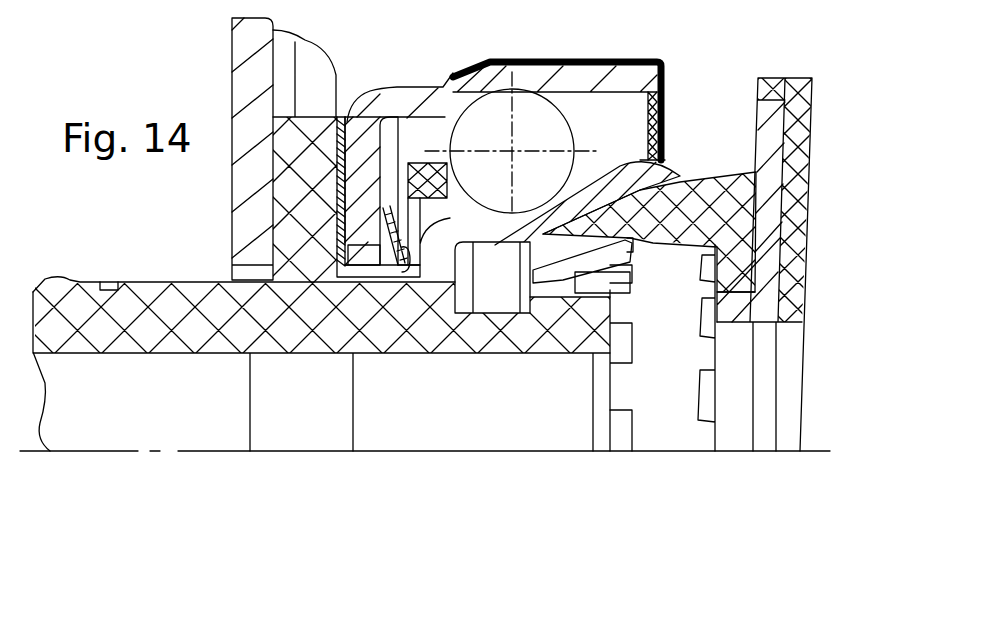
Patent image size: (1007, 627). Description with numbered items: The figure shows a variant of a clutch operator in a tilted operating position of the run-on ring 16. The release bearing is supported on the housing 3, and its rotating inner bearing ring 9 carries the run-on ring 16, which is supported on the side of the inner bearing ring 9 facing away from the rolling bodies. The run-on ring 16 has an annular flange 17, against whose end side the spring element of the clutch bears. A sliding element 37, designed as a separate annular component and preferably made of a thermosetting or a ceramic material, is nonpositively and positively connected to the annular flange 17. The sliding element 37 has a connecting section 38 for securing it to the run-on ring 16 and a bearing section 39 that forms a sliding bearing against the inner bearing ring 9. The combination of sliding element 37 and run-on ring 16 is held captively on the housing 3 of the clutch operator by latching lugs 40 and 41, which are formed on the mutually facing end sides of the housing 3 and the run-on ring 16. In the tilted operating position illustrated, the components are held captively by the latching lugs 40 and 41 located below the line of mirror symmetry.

The housing 3 is at (197, 330).
The inner bearing ring 9 is at (634, 176).
The run-on ring 16 is at (786, 352).
The annular flange 17 is at (770, 188).
The sliding element 37 is at (695, 172).
The connecting section 38 is at (742, 262).
The bearing section 39 is at (655, 250).
The latching lug 40 is at (700, 318).
The latching lug 41 is at (630, 425).